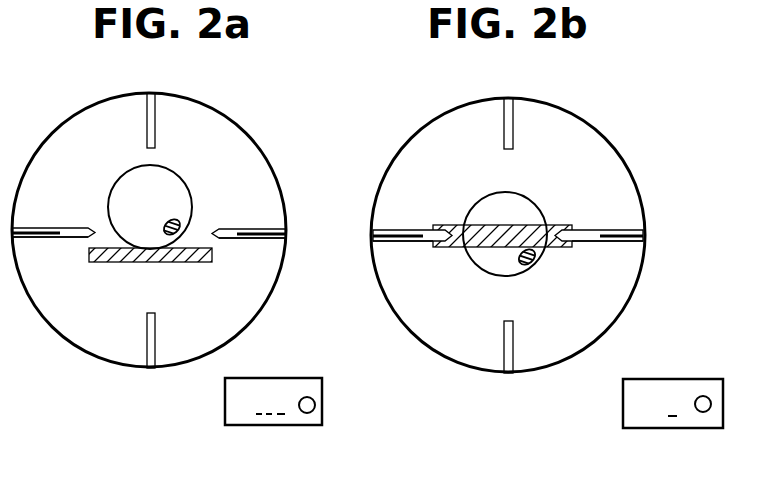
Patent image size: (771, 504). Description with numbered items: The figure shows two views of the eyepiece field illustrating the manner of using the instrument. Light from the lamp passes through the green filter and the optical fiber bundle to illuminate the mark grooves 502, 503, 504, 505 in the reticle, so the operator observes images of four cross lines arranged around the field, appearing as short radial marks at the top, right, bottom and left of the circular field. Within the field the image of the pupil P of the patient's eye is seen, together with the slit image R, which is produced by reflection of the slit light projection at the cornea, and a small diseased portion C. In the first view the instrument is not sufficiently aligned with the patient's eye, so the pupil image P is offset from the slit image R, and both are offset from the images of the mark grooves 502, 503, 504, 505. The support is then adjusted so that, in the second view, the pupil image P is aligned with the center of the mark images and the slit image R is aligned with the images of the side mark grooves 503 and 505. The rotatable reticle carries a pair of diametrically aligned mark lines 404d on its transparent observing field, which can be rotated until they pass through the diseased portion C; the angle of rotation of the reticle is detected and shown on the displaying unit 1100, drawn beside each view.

In FIG. 2a, the mark groove 502 is at (152, 95).
In FIG. 2b, the mark groove 502 is at (508, 97).
In FIG. 2a, the mark groove 503 is at (268, 226).
In FIG. 2b, the mark groove 503 is at (617, 228).
In FIG. 2a, the mark groove 504 is at (150, 368).
In FIG. 2b, the mark groove 504 is at (508, 373).
In FIG. 2a, the mark groove 505 is at (80, 228).
In FIG. 2b, the mark groove 505 is at (424, 230).
In FIG. 2a, the mark lines 404d is at (45, 237).
In FIG. 2b, the mark lines 404d is at (383, 241).
In FIG. 2a, the image of the pupil P is at (167, 192).
In FIG. 2b, the image of the pupil P is at (514, 212).
In FIG. 2a, the diseased portion C is at (180, 221).
In FIG. 2b, the diseased portion C is at (532, 262).
In FIG. 2a, the slit image R is at (125, 259).
In FIG. 2b, the slit image R is at (487, 249).
In FIG. 2a, the displaying unit 1100 is at (310, 425).
In FIG. 2b, the displaying unit 1100 is at (682, 428).